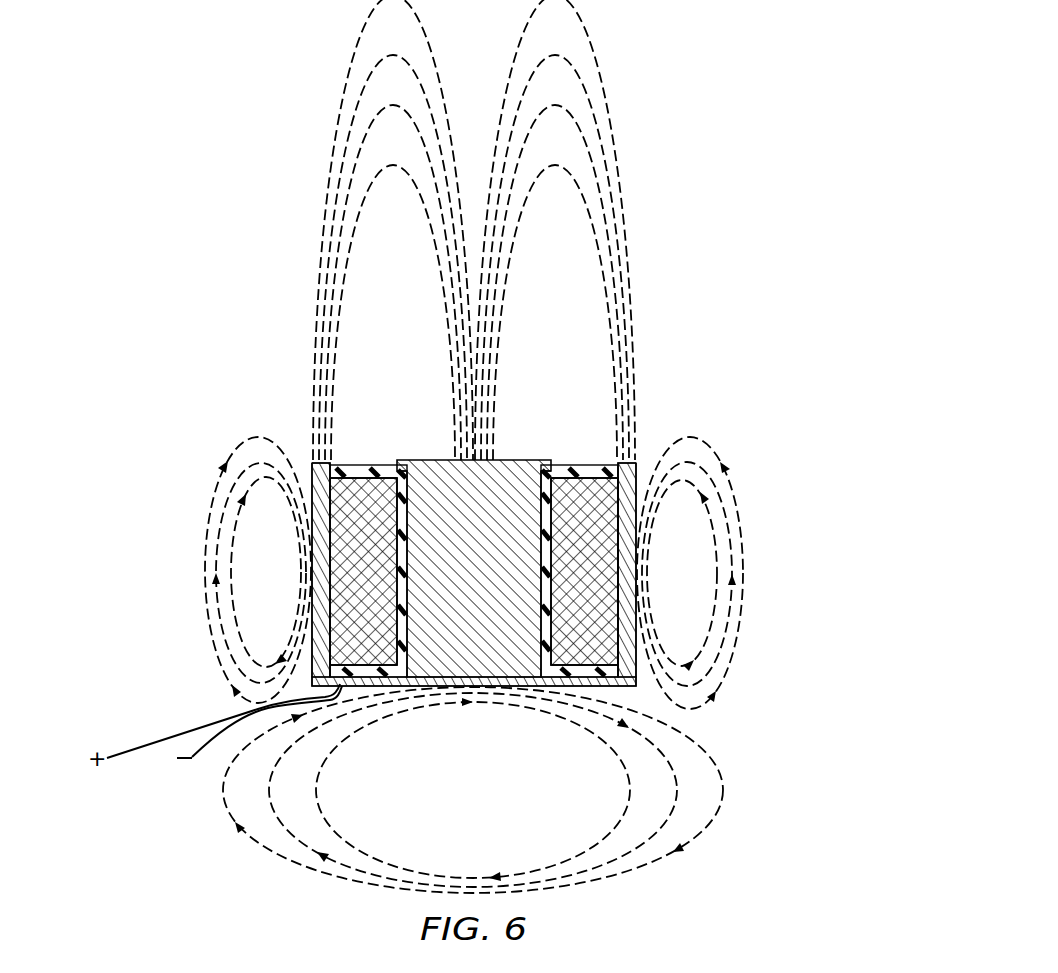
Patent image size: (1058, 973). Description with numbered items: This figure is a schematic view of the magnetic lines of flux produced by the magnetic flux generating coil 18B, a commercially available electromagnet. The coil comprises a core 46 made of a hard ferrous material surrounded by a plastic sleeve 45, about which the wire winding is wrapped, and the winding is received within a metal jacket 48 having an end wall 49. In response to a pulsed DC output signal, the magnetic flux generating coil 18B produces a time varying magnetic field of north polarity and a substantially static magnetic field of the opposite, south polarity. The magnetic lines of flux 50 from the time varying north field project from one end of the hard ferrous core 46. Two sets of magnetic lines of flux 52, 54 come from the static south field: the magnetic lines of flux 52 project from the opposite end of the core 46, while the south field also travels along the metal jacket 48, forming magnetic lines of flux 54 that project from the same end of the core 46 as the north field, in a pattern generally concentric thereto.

The magnetic lines of flux 50 is at (638, 119).
The magnetic flux generating coil 18B is at (740, 392).
The magnetic lines of flux 54 is at (196, 482).
The core 46 is at (420, 460).
The plastic sleeve 45 is at (582, 464).
The metal jacket 48 is at (638, 460).
The end wall 49 is at (640, 692).
The magnetic lines of flux 52 is at (288, 888).